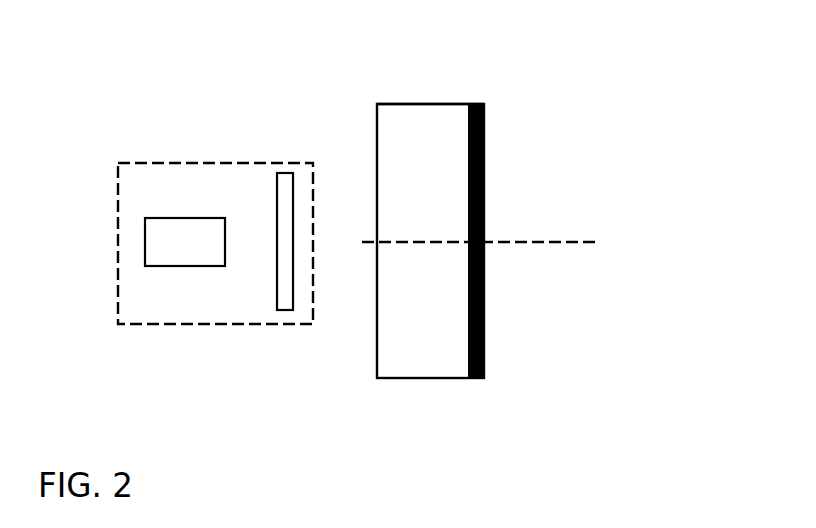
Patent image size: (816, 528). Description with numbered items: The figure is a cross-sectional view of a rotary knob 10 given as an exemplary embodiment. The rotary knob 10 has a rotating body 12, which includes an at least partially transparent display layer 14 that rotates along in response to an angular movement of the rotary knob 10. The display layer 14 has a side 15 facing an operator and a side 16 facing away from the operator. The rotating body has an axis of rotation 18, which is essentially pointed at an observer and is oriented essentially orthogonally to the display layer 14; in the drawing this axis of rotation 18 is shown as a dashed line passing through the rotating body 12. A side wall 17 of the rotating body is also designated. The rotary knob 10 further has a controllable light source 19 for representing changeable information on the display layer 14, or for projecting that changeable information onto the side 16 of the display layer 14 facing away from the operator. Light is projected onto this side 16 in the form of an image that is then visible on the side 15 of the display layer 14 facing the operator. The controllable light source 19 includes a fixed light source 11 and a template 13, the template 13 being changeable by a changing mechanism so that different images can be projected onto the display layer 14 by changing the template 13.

The rotary knob 10 is at (438, 233).
The fixed light source 11 is at (170, 257).
The rotating body 12 is at (429, 348).
The template 13 is at (283, 310).
The display layer 14 is at (476, 178).
The side facing an operator 15 is at (483, 286).
The side facing away from the operator 16 is at (465, 363).
The side wall of the rotating body 17 is at (402, 104).
The axis of rotation 18 is at (574, 242).
The controllable light source 19 is at (207, 163).